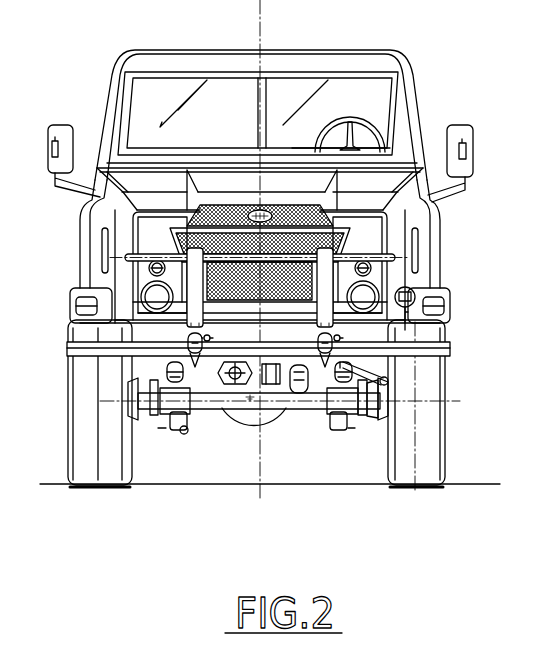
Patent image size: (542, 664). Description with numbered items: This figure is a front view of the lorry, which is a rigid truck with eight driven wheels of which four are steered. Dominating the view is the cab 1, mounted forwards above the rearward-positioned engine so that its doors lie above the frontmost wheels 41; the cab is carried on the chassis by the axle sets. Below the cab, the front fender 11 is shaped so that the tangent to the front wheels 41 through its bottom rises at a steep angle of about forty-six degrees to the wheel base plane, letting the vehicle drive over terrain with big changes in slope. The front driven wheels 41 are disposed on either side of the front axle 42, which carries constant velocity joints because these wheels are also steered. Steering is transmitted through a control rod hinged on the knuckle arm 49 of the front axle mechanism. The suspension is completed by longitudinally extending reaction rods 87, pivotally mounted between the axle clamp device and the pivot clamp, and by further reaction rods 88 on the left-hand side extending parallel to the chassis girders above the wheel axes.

The cab 1 is at (293, 44).
The front fender 11 is at (440, 338).
The front driven wheels 41 is at (90, 420).
The front axle 42 is at (253, 422).
The knuckle arm 49 is at (380, 371).
The reaction rod 87 is at (182, 433).
The reaction rod 88 is at (305, 353).